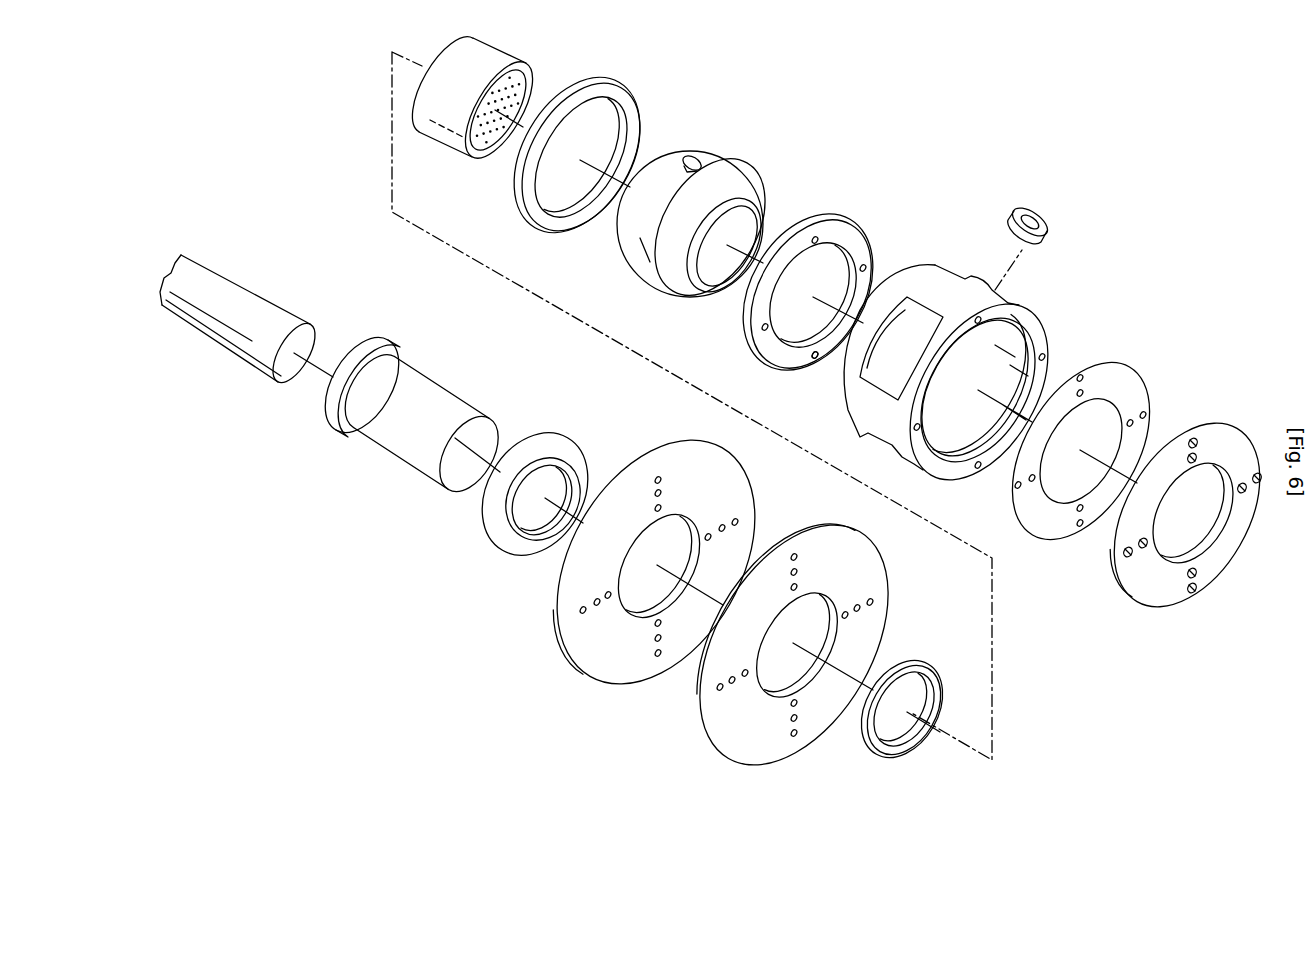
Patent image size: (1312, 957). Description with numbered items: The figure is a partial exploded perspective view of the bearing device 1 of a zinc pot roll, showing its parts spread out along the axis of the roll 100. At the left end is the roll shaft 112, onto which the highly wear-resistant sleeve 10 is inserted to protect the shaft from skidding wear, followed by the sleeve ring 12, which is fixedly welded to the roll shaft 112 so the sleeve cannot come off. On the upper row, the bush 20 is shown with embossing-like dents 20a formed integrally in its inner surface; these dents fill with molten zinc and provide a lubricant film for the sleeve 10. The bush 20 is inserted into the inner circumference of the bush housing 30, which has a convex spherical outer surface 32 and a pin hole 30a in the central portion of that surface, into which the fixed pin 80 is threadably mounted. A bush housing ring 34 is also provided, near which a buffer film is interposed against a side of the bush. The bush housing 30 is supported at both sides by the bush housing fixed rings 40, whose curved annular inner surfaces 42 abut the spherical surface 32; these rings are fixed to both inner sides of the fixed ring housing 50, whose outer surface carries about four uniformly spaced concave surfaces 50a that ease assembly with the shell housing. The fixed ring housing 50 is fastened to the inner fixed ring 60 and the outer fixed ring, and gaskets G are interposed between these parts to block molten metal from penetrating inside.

The bearing device 1 is at (1089, 262).
The sleeve 10 is at (408, 458).
The sleeve ring 12 is at (518, 548).
The bush 20 is at (413, 103).
The dents 20a is at (480, 128).
The bush housing 30 is at (638, 242).
The pin hole 30a is at (692, 158).
The curved annular surface 32 is at (741, 178).
The bush housing ring 34 is at (881, 749).
The bush housing fixed ring 40 is at (522, 188).
The curved annular inner surface 42 is at (825, 352).
The fixed ring housing 50 is at (937, 276).
The concave surfaces 50a is at (907, 320).
The inner fixed ring 60 is at (1167, 590).
The fixed pin 80 is at (1037, 226).
The roll 100 is at (189, 248).
The roll shaft 112 is at (246, 352).
The gasket G is at (1123, 378).